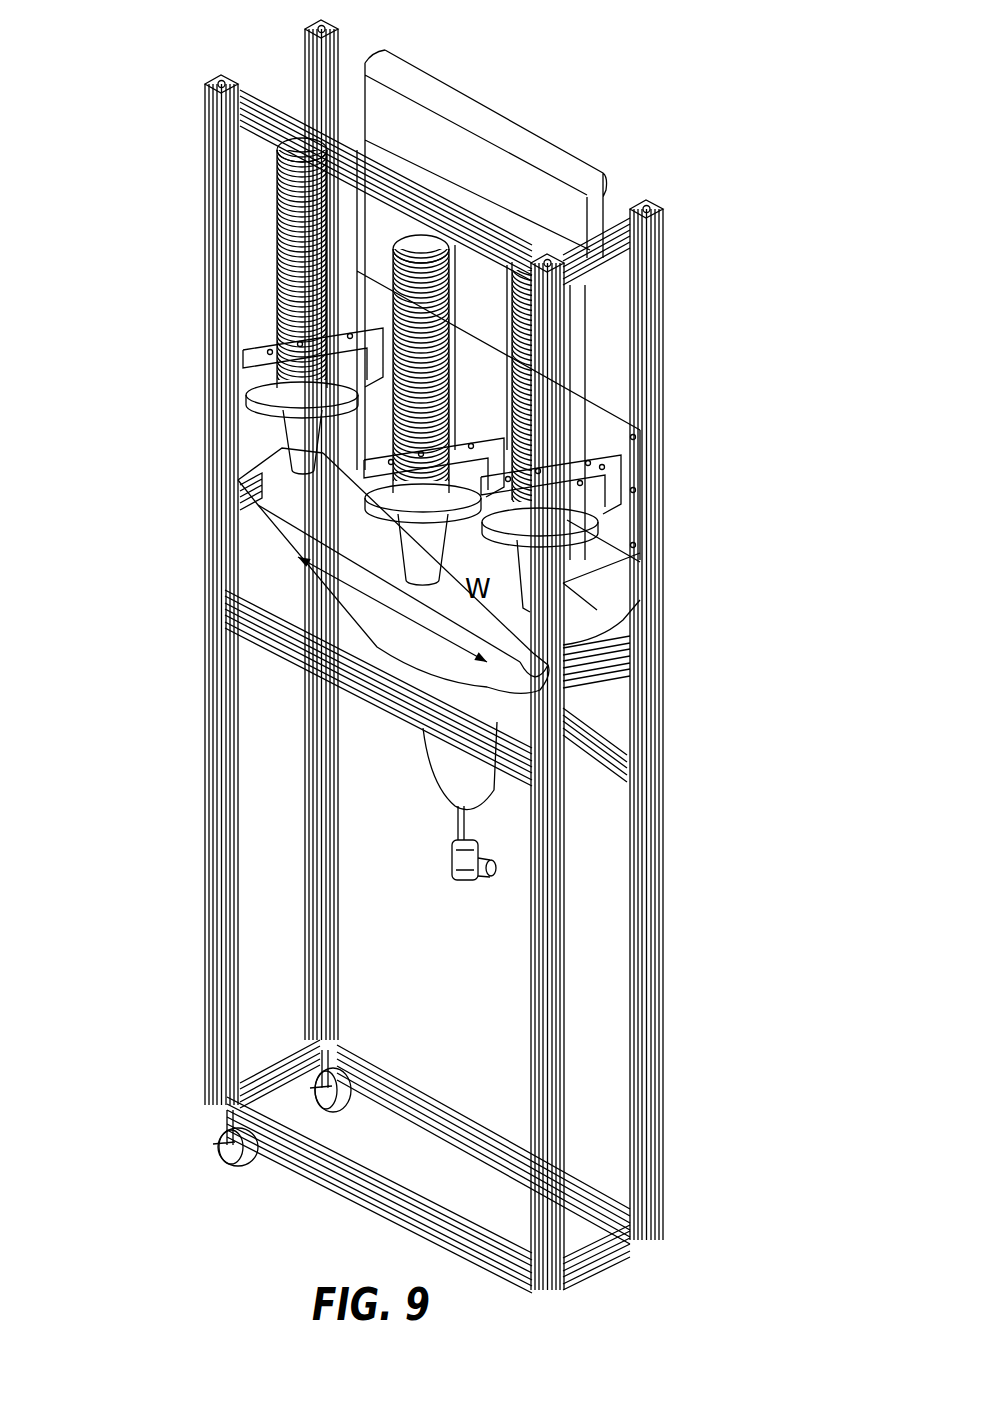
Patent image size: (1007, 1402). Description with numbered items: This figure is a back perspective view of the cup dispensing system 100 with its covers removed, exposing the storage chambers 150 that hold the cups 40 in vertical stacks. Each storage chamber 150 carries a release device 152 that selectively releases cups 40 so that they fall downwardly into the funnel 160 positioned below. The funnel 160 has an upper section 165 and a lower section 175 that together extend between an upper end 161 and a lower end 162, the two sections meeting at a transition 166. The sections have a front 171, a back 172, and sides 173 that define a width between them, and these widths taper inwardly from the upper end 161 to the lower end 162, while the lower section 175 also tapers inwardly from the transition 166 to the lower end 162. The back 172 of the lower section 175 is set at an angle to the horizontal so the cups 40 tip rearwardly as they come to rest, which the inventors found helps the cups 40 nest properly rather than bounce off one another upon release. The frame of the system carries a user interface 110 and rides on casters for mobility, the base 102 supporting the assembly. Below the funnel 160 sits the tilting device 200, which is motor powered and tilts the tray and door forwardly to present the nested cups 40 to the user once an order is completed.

The cup dispensing system 100 is at (185, 58).
The base frame 102 is at (338, 1190).
The user interface 110 is at (425, 85).
The cups 40 is at (422, 253).
The storage chambers 150 is at (270, 217).
The release device 152 is at (365, 520).
The funnel 160 is at (650, 647).
The upper end 161 is at (267, 472).
The lower end 162 is at (460, 822).
The upper section 165 is at (297, 577).
The transition 166 is at (483, 693).
The front 171 is at (605, 618).
The back 172 is at (390, 640).
The sides 173 is at (525, 688).
The lower section 175 is at (427, 747).
The tilting device 200 is at (468, 887).